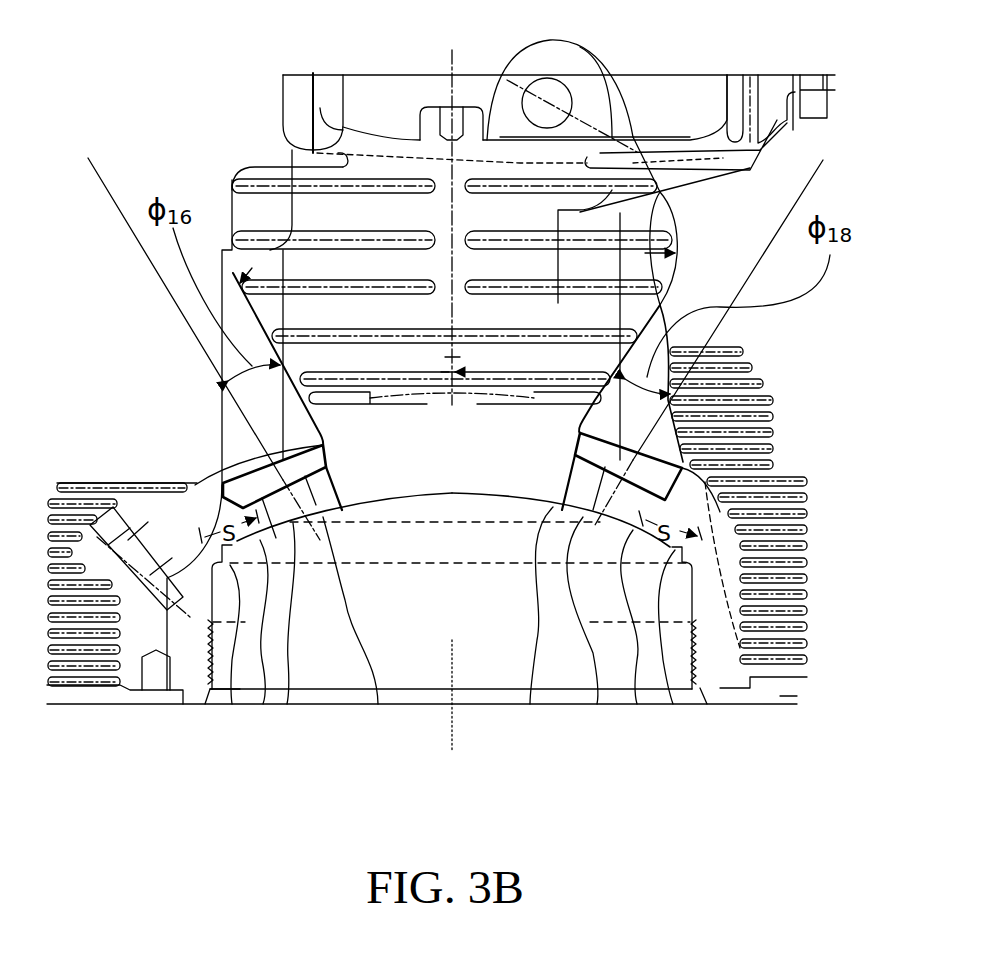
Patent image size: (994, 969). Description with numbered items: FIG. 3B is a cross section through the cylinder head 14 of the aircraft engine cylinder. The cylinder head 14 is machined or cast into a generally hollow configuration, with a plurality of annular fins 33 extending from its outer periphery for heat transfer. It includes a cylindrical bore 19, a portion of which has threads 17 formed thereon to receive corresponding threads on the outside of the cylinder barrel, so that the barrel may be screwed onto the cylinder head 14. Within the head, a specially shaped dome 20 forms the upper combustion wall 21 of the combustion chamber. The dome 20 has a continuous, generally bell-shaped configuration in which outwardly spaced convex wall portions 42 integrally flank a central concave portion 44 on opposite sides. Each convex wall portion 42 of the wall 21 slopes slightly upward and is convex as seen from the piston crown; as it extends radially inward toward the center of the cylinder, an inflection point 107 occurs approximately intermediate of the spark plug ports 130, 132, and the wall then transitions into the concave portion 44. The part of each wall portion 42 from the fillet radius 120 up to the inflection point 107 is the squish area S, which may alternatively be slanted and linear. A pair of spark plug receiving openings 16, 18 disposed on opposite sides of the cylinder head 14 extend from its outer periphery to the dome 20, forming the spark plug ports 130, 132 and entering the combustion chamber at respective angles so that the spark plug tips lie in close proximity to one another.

The cylinder head 14 is at (166, 108).
The spark plug receiving opening 16 is at (265, 477).
The threads 17 is at (243, 690).
The spark plug receiving opening 18 is at (668, 472).
The cylindrical bore 19 is at (177, 545).
The dome 20 is at (490, 491).
The upper combustion wall 21 is at (420, 494).
The annular fins 33 is at (803, 482).
The convex wall portions 42 is at (283, 704).
The central concave portion 44 is at (430, 497).
The inflection point 107 is at (343, 704).
The fillet radius 120 is at (253, 704).
The spark plug port 130 is at (378, 704).
The spark plug port 132 is at (530, 704).